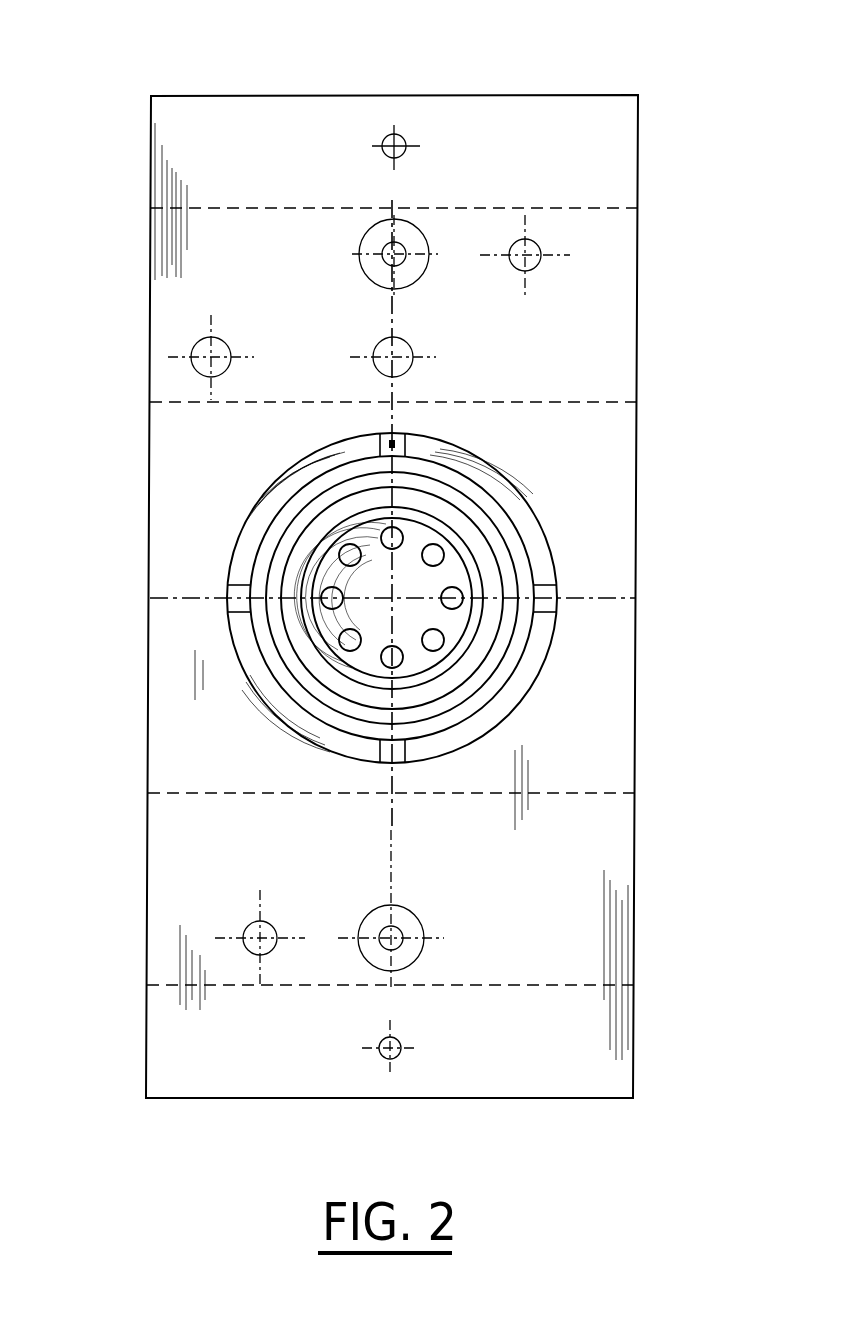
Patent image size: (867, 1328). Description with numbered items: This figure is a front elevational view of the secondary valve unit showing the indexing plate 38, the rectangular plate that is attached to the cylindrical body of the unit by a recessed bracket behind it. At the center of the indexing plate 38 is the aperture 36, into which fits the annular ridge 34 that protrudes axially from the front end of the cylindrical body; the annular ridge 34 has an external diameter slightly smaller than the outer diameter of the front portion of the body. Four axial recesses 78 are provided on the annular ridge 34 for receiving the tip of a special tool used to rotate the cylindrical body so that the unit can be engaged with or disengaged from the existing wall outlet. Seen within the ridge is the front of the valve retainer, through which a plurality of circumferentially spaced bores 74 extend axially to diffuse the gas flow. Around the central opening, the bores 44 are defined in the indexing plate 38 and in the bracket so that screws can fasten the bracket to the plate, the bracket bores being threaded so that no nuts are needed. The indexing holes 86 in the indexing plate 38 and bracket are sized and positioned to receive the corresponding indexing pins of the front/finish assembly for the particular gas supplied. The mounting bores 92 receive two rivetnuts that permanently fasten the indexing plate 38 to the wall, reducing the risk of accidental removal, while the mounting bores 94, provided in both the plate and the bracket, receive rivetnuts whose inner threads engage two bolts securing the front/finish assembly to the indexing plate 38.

The indexing plate 38 is at (606, 340).
The mounting bores 92 is at (396, 135).
The mounting bores 94 is at (396, 252).
The bores 44 is at (537, 243).
The indexing holes 86 is at (387, 352).
The annular ridge 34 is at (533, 522).
The aperture 36 is at (555, 560).
The axial recesses 78 is at (400, 445).
The bores 74 is at (536, 648).